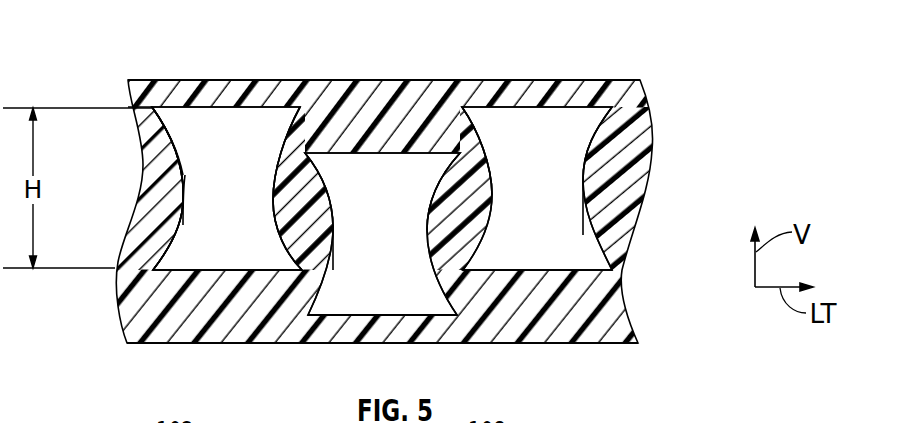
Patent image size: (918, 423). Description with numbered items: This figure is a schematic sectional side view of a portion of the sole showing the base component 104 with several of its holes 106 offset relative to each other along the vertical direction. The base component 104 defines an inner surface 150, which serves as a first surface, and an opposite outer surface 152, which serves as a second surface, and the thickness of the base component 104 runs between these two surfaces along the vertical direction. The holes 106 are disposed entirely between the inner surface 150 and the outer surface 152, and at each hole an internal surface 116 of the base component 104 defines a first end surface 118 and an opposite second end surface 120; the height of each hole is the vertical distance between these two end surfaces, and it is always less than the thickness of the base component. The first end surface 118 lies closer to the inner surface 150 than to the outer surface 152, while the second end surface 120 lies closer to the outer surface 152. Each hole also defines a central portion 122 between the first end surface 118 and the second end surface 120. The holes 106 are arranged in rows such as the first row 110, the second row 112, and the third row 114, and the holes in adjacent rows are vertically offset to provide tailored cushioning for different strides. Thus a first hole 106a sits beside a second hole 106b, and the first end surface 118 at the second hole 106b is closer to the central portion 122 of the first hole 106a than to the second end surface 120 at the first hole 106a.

The base component 104 is at (600, 288).
The holes 106 is at (191, 178).
The first hole 106a is at (175, 131).
The second hole 106b is at (417, 297).
The first row 110 is at (208, 99).
The second row 112 is at (368, 92).
The third row 114 is at (553, 84).
The internal surface 116 is at (176, 132).
The first end surface 118 is at (257, 109).
The second end surface 120 is at (222, 269).
The central portion 122 is at (178, 224).
The inner surface 150 is at (462, 79).
The outer surface 152 is at (553, 344).